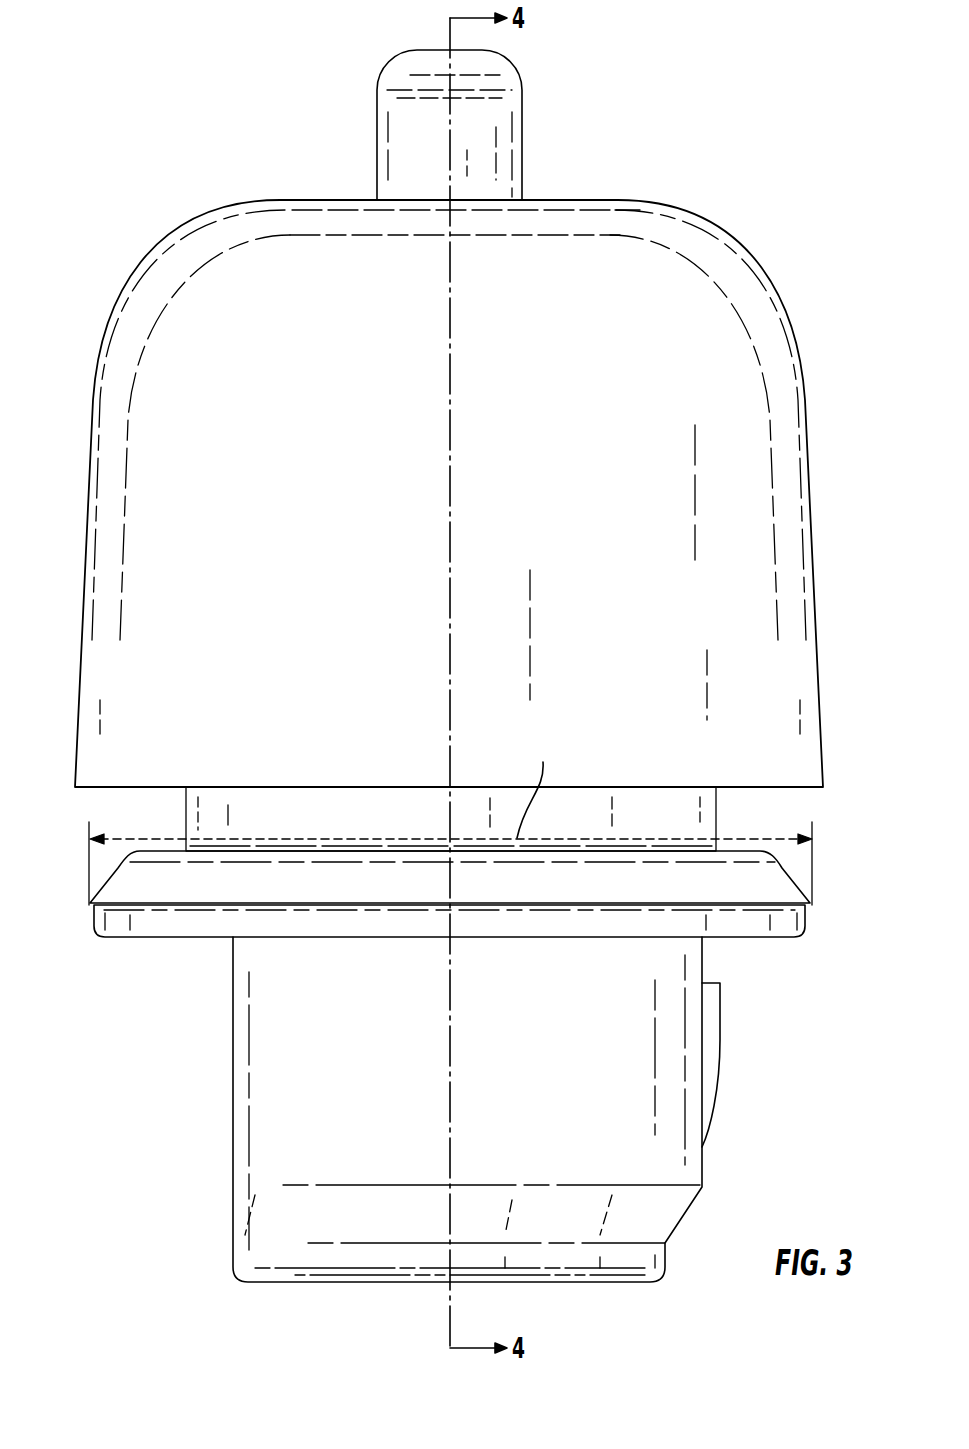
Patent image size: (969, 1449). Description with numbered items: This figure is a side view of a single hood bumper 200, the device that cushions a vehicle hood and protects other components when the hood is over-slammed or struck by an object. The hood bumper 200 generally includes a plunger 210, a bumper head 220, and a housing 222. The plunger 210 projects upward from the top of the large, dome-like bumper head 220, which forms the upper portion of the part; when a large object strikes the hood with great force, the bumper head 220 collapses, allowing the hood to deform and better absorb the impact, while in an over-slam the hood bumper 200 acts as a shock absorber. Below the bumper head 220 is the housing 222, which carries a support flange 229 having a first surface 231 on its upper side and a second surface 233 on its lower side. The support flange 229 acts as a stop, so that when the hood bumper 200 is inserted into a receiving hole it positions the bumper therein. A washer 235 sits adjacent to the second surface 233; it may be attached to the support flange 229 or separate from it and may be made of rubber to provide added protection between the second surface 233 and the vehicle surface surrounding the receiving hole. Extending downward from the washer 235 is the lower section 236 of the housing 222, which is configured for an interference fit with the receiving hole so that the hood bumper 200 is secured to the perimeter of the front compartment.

The hood bumper 200 is at (141, 182).
The plunger 210 is at (493, 108).
The bumper head 220 is at (685, 320).
The housing 222 is at (328, 808).
The support flange 229 is at (810, 903).
The first surface 231 is at (735, 850).
The second surface 233 is at (92, 910).
The washer 235 is at (165, 935).
The lower section 236 is at (663, 1073).